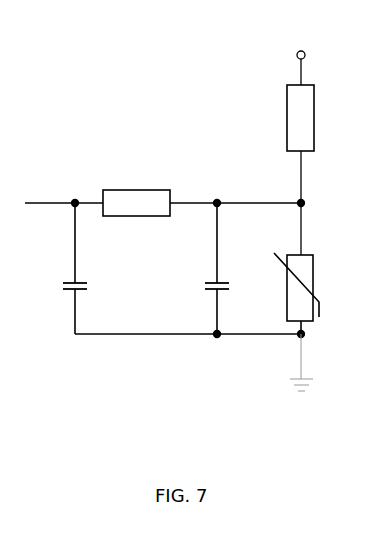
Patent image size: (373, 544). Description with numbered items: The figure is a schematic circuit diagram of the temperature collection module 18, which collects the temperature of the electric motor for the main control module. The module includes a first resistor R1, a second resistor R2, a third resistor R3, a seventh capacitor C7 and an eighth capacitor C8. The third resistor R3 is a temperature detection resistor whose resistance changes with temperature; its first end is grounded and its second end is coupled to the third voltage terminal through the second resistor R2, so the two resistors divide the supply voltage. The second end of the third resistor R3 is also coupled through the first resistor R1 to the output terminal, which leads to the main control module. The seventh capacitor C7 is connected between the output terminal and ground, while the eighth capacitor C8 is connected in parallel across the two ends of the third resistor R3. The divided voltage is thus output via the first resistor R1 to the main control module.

The temperature collection module 18 is at (158, 66).
The first resistor R1 is at (136, 193).
The second resistor R2 is at (313, 118).
The third resistor R3 is at (308, 287).
The seventh capacitor C7 is at (83, 268).
The eighth capacitor C8 is at (225, 268).